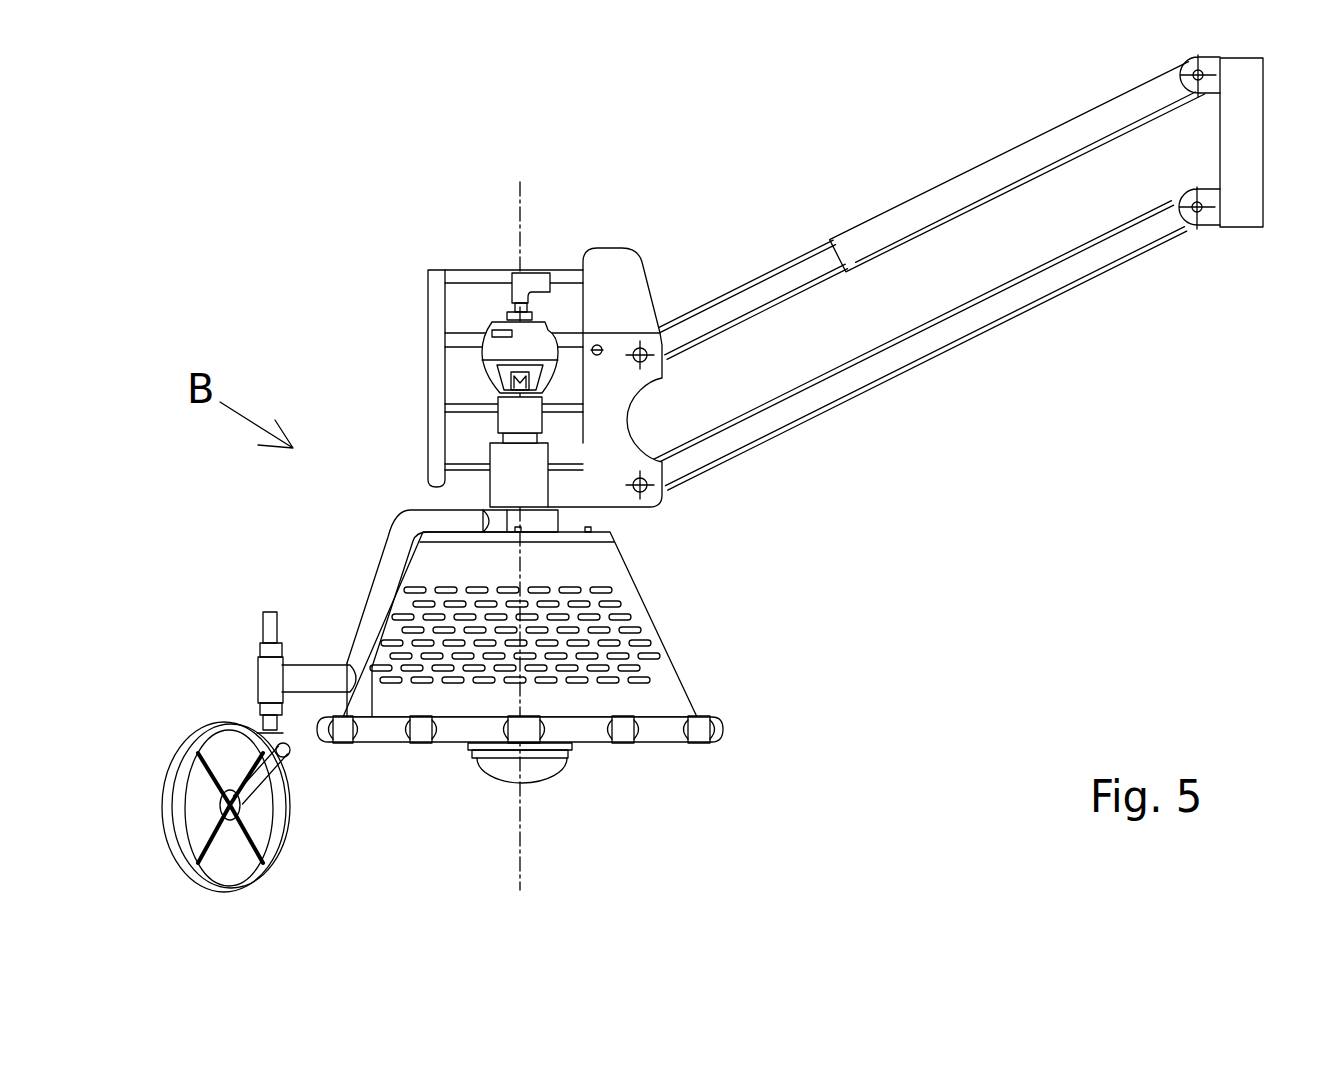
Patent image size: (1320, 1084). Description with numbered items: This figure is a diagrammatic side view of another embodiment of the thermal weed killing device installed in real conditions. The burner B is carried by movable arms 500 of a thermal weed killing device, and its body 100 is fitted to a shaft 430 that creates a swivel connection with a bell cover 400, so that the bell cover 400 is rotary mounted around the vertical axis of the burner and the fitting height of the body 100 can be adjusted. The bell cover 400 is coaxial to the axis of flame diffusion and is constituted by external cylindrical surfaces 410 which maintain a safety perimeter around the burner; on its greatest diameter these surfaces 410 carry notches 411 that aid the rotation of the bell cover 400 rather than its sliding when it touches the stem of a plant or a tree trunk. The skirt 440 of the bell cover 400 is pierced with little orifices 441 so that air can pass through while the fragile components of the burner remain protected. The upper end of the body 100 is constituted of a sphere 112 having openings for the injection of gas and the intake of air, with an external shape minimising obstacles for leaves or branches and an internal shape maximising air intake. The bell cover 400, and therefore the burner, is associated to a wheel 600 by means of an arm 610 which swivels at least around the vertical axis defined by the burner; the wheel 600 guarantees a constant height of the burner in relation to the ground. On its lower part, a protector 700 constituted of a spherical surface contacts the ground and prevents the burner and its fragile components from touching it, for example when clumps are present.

The body 100 is at (512, 422).
The sphere 112 is at (508, 327).
The shaft 430 is at (510, 468).
The movable arms 500 is at (848, 238).
The arm 610 is at (373, 583).
The bell cover 400 is at (554, 666).
The skirt 440 is at (627, 570).
The little orifices 441 is at (623, 615).
The external cylindrical surfaces 410 is at (722, 730).
The notches 411 is at (420, 732).
The protector 700 is at (528, 767).
The wheel 600 is at (190, 748).